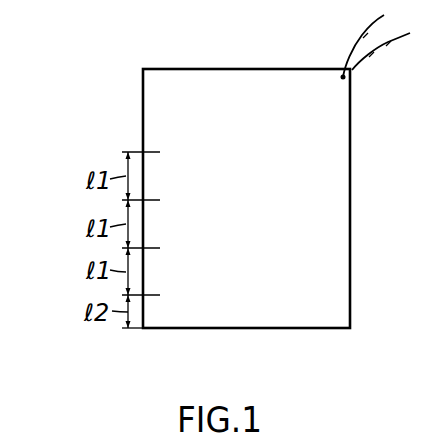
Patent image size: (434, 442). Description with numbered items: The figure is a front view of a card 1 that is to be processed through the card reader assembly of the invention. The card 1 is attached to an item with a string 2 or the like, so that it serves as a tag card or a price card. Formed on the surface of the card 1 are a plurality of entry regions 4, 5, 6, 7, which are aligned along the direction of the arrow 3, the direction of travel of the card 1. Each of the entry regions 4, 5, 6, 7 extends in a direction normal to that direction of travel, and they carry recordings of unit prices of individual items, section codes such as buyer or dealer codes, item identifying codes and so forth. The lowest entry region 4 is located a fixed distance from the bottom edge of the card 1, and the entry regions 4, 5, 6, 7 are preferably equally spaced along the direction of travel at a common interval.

The card 1 is at (320, 101).
The string 2 is at (348, 45).
The arrow 3 is at (72, 172).
The entry region 4 is at (277, 292).
The entry region 5 is at (322, 248).
The entry region 6 is at (318, 200).
The entry region 7 is at (318, 152).